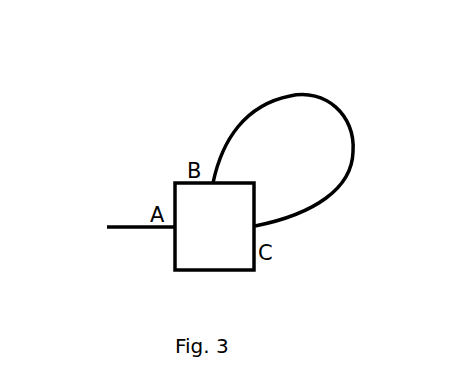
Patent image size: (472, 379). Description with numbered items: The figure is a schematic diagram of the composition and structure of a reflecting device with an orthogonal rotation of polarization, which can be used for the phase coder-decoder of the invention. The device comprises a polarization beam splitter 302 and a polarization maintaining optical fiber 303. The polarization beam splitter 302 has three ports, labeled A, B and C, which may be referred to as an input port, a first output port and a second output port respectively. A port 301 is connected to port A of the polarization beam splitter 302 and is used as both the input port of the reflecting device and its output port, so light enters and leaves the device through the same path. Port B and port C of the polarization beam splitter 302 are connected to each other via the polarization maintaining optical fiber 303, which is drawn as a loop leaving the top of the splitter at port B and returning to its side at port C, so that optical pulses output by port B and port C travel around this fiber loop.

The port 301 is at (118, 228).
The polarization beam splitter 302 is at (214, 226).
The polarization maintaining optical fiber 303 is at (240, 118).